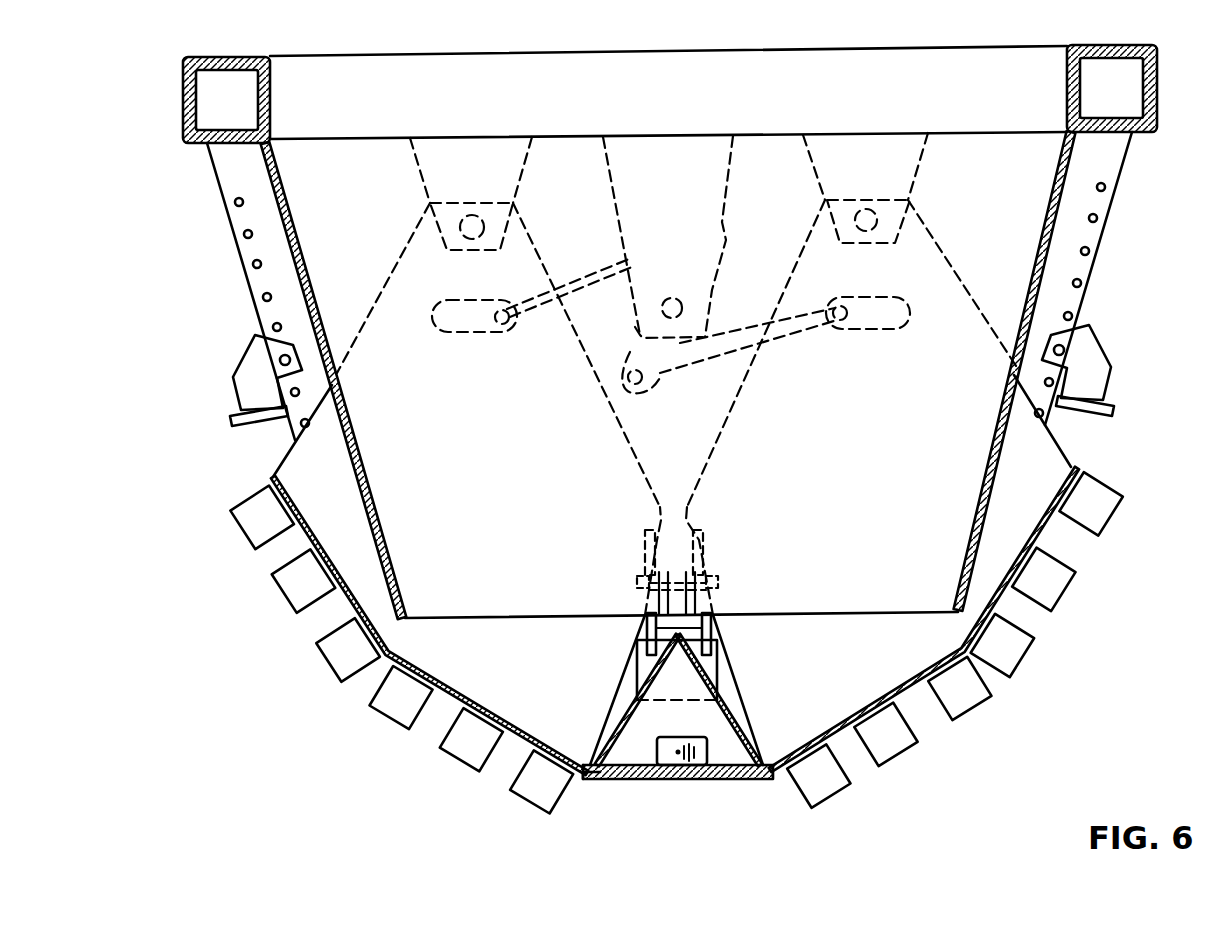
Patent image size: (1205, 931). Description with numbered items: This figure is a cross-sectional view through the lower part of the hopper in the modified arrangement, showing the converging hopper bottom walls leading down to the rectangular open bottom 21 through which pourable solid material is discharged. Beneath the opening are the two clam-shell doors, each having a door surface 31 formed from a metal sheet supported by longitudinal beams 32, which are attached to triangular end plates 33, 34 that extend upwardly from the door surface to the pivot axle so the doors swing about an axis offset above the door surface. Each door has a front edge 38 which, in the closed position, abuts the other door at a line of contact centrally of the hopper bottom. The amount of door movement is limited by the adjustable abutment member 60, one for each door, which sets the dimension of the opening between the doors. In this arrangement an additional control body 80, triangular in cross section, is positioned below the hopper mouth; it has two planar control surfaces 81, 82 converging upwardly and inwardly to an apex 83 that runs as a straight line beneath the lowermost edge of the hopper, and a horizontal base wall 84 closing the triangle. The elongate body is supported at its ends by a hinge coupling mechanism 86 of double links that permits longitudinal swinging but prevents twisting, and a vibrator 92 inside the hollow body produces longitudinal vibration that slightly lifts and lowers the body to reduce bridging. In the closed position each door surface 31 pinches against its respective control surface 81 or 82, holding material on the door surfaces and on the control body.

The open bottom 21 is at (540, 619).
The door surface 31 is at (437, 680).
The longitudinal beams 32 is at (295, 590).
The triangular end plate 33 is at (583, 432).
The triangular end plate 34 is at (780, 420).
The front edge 38 is at (602, 783).
The abutment member 60 is at (233, 367).
The control body 80 is at (697, 793).
The control surface 81 is at (630, 700).
The control surface 82 is at (730, 700).
The apex 83 is at (727, 652).
The base wall 84 is at (633, 780).
The hinge coupling mechanism 86 is at (730, 597).
The vibrator 92 is at (713, 757).